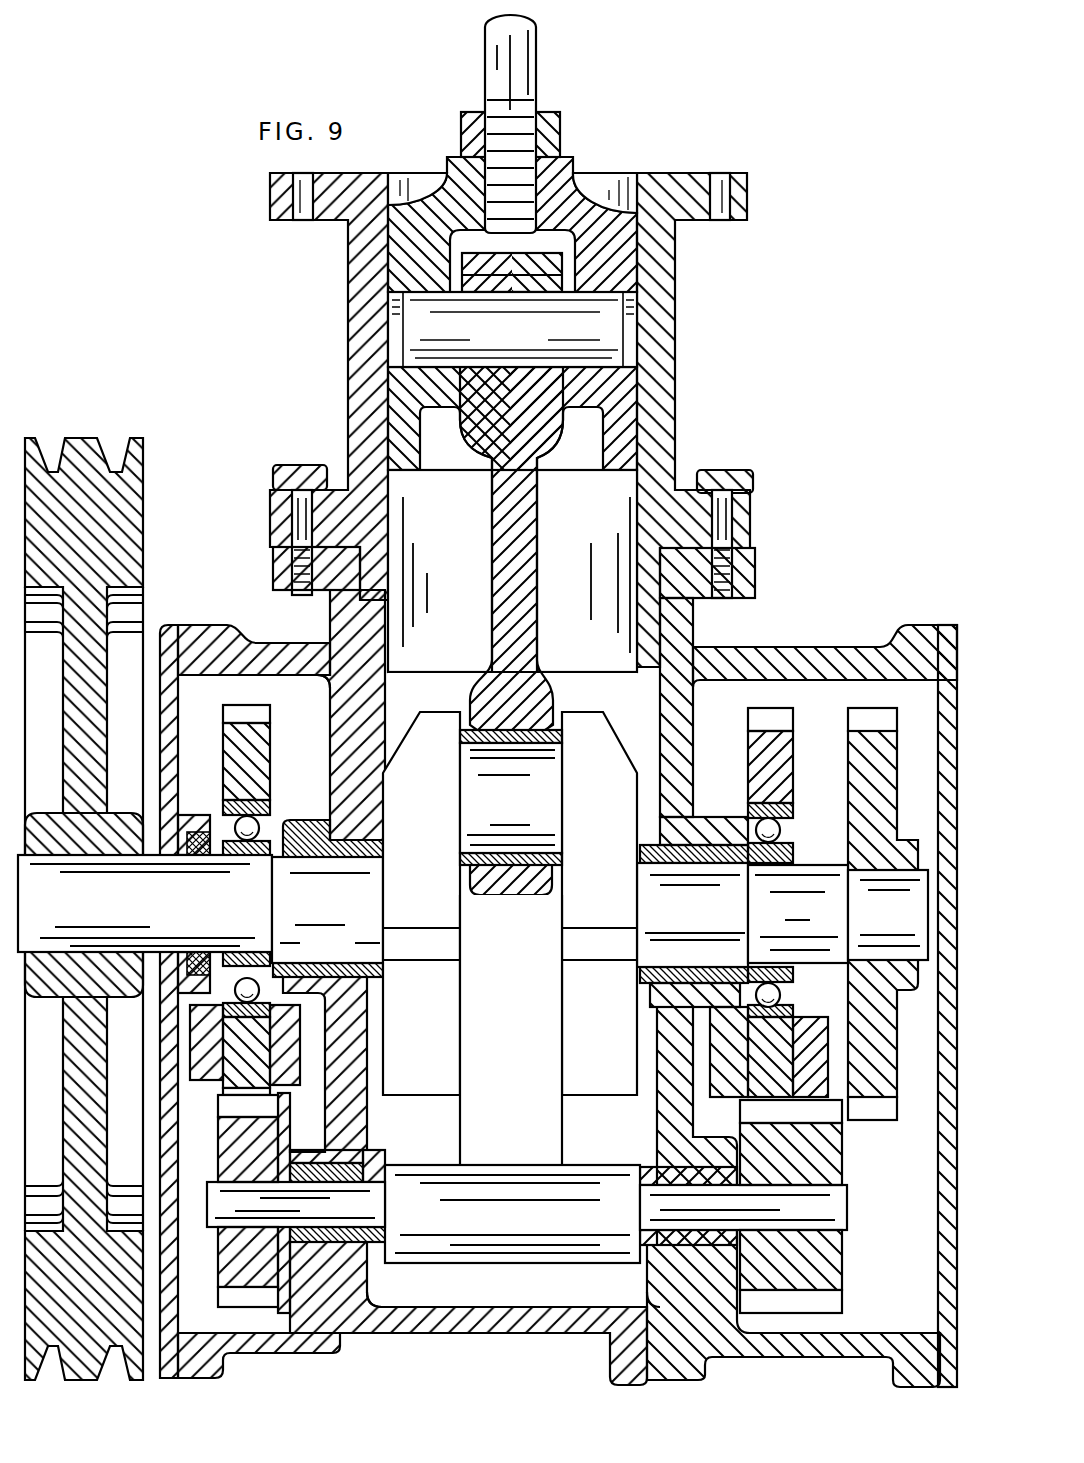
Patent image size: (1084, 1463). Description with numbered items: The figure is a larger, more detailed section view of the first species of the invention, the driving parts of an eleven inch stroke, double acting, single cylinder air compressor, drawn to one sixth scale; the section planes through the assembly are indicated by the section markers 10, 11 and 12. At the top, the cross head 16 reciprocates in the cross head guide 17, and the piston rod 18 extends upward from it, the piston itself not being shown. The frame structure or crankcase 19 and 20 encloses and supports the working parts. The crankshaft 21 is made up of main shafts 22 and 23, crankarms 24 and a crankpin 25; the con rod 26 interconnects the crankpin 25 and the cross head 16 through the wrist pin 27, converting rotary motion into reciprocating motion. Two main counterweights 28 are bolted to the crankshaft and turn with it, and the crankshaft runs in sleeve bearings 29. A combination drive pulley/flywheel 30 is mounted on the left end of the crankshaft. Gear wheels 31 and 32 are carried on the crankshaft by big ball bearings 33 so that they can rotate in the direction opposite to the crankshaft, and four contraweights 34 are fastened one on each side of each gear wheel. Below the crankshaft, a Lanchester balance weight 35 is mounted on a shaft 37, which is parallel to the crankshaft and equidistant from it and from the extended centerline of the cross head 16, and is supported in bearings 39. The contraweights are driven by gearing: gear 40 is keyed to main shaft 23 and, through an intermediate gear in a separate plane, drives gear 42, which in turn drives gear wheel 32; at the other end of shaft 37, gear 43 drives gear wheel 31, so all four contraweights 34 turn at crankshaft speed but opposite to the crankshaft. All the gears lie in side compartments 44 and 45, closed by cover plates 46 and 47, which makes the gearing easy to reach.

The section line 10- 10 is at (872, 602).
The section line 11- 11 is at (808, 687).
The section line 12- 12 is at (513, 16).
The cross head 16 is at (602, 470).
The cross head guide 17 is at (394, 652).
The piston rod 18 is at (522, 70).
The crankcase 19 is at (333, 1320).
The crankcase 20 is at (907, 640).
The crankshaft 21 is at (595, 684).
The main shaft 22 is at (200, 909).
The main shaft 23 is at (782, 915).
The crankarms 24 is at (402, 758).
The crankpin 25 is at (511, 812).
The con rod 26 is at (525, 553).
The wrist pin 27 is at (512, 313).
The main counterweights 28 is at (425, 1077).
The sleeve bearings 29 is at (350, 961).
The drive pulley/flywheel 30 is at (135, 521).
The gear wheel 31 is at (230, 768).
The gear wheel 32 is at (760, 760).
The big ball bearings 33 is at (268, 814).
The contraweights 34 is at (204, 1078).
The Lanchester balance weight 35 is at (505, 1248).
The shaft 37 is at (837, 1210).
The bearings 39 is at (377, 1257).
The gear 40 is at (873, 1108).
The gear 42 is at (830, 1280).
The gear 43 is at (230, 1260).
The side compartment 44 is at (819, 755).
The side compartment 45 is at (254, 745).
The cover plate 46 is at (950, 625).
The cover plate 47 is at (172, 625).